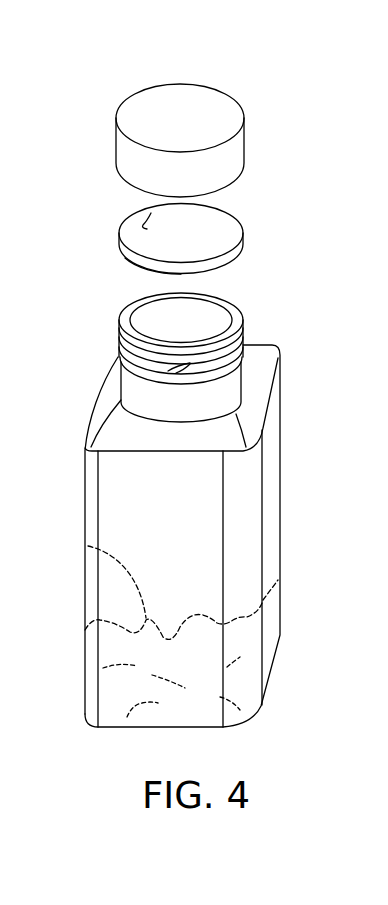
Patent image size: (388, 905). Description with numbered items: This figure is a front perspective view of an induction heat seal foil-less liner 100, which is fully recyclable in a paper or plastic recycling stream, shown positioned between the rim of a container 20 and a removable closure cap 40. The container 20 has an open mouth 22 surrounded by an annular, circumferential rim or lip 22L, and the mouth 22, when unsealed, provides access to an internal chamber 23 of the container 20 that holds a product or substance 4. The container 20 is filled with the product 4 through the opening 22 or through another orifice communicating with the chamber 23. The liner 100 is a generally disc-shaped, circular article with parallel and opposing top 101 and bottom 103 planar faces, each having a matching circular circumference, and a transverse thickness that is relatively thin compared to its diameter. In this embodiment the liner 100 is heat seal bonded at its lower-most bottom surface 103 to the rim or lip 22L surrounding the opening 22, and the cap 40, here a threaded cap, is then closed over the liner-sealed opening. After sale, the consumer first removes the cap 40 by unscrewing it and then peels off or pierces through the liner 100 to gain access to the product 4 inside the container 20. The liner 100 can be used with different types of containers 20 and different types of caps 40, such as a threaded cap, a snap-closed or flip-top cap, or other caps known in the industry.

The removable closure cap 40 is at (244, 142).
The induction heat seal foil-less liner 100 is at (240, 240).
The top planar face 101 is at (127, 224).
The bottom planar face 103 is at (130, 266).
The open mouth 22 is at (197, 318).
The rim or lip 22L is at (243, 332).
The container 20 is at (92, 410).
The internal chamber 23 is at (212, 508).
The product or substance 4 is at (85, 545).